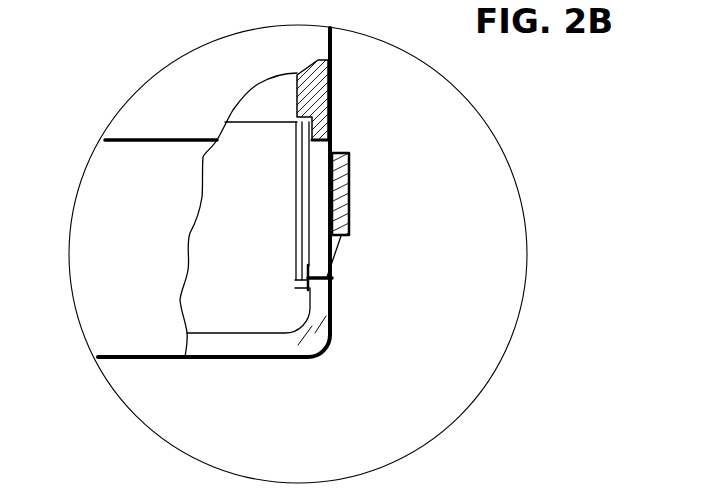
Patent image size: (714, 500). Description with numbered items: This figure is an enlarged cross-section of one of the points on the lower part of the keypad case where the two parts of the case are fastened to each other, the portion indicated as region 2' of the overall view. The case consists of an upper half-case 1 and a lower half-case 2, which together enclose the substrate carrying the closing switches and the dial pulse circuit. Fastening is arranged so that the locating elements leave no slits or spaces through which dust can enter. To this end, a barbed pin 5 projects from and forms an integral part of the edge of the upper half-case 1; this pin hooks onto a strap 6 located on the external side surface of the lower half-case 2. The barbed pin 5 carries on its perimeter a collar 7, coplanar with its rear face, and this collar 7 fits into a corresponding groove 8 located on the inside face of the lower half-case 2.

The upper half-case 1 is at (158, 110).
The lower half-case 2 is at (159, 215).
The detail region 2' is at (298, 241).
The barbed pin 5 is at (318, 181).
The strap 6 is at (342, 221).
The collar 7 is at (307, 263).
The groove 8 is at (310, 290).